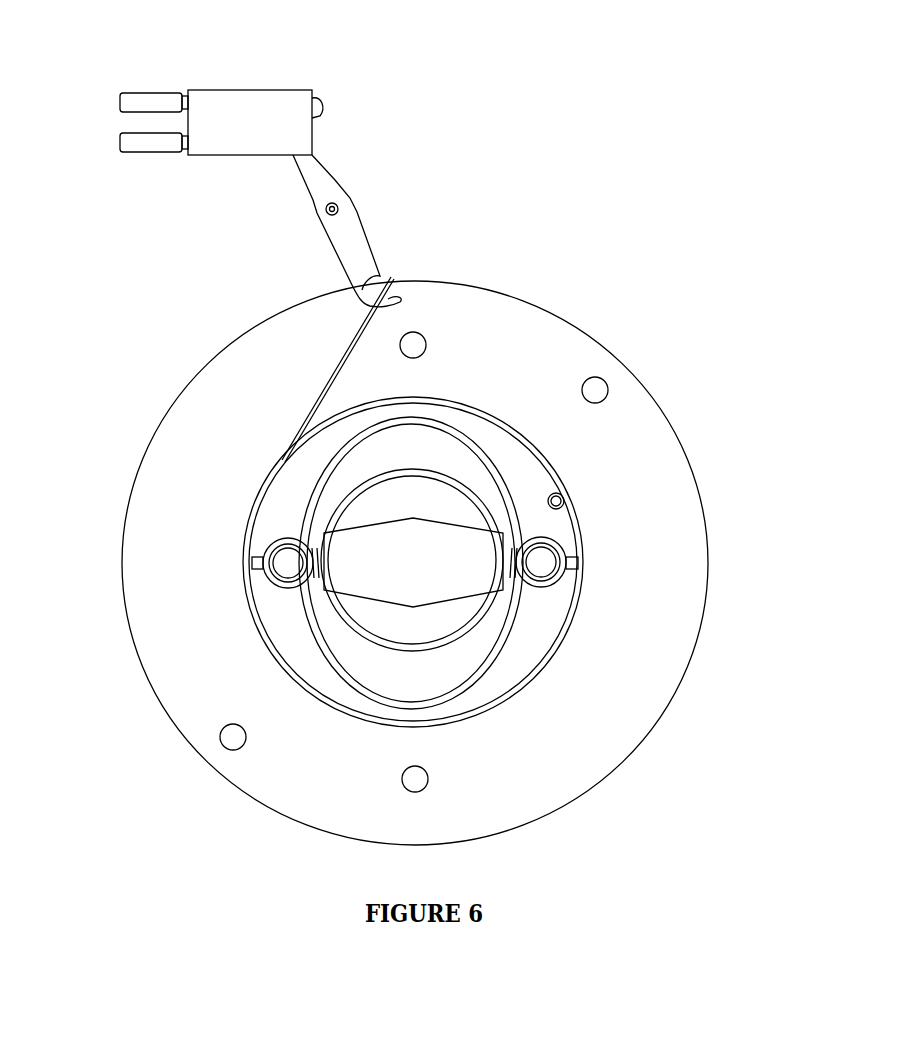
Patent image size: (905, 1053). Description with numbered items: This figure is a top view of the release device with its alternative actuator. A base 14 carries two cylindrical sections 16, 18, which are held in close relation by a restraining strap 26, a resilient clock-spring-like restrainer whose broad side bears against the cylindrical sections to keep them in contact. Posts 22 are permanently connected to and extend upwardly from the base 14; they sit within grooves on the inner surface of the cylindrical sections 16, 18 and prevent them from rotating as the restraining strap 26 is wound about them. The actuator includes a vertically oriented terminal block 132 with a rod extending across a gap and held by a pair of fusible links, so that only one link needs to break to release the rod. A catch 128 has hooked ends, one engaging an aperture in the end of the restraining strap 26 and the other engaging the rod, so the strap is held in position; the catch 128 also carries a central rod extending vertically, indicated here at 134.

The base 14 is at (235, 686).
The cylindrical section 16 is at (459, 437).
The cylindrical section 18 is at (535, 675).
The posts 22 is at (267, 564).
The restraining strap 26 is at (262, 455).
The catch 128 is at (377, 226).
The terminal block 132 is at (228, 79).
The pivot pin 134 is at (308, 210).